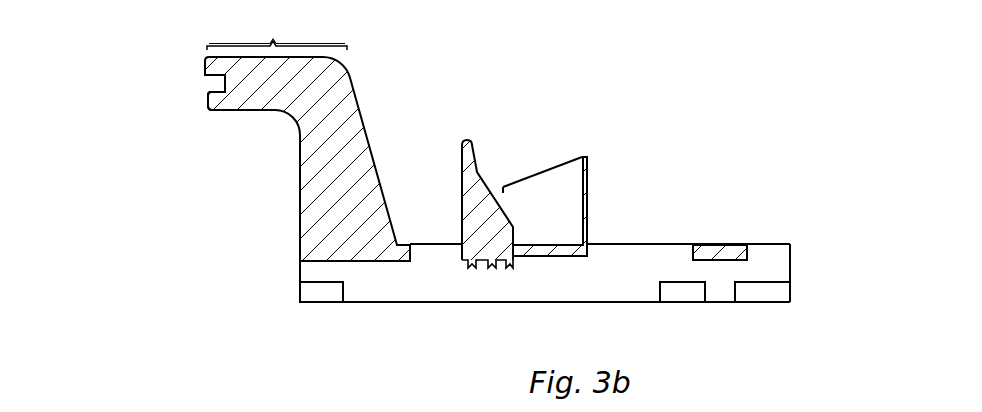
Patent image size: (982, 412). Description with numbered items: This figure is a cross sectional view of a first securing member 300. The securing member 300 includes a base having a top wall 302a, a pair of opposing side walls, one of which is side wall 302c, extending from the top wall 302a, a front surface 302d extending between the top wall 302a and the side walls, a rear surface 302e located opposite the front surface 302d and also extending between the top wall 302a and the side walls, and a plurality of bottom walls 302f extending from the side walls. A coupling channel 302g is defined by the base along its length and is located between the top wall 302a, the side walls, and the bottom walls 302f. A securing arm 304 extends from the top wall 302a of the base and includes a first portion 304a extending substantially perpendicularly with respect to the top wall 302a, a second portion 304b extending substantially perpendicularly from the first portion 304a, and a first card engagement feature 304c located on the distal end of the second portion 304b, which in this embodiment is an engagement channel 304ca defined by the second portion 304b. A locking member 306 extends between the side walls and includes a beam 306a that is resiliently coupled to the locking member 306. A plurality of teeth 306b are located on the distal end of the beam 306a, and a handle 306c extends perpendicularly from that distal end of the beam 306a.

The first securing member 300 is at (640, 98).
The top wall 302a is at (718, 243).
The side wall 302c is at (635, 252).
The front surface 302d is at (300, 270).
The rear surface 302e is at (791, 268).
The bottom walls 302f is at (322, 302).
The coupling channel 302g is at (767, 263).
The securing arm 304 is at (375, 166).
The first portion 304a is at (289, 120).
The second portion 304b is at (277, 33).
The first card engagement feature 304c is at (191, 83).
The engagement channel 304ca is at (204, 91).
The locking member 306 is at (547, 172).
The beam 306a is at (548, 258).
The teeth 306b is at (508, 268).
The handle 306c is at (467, 139).